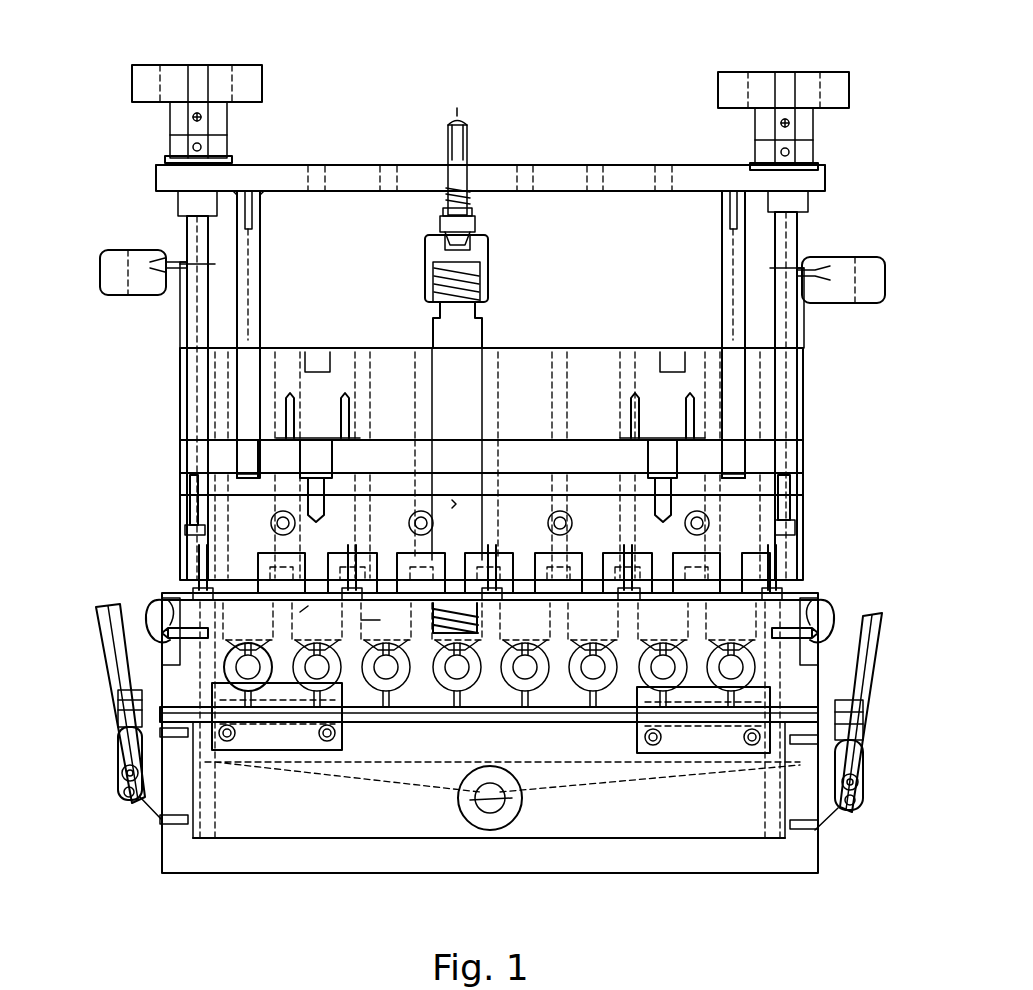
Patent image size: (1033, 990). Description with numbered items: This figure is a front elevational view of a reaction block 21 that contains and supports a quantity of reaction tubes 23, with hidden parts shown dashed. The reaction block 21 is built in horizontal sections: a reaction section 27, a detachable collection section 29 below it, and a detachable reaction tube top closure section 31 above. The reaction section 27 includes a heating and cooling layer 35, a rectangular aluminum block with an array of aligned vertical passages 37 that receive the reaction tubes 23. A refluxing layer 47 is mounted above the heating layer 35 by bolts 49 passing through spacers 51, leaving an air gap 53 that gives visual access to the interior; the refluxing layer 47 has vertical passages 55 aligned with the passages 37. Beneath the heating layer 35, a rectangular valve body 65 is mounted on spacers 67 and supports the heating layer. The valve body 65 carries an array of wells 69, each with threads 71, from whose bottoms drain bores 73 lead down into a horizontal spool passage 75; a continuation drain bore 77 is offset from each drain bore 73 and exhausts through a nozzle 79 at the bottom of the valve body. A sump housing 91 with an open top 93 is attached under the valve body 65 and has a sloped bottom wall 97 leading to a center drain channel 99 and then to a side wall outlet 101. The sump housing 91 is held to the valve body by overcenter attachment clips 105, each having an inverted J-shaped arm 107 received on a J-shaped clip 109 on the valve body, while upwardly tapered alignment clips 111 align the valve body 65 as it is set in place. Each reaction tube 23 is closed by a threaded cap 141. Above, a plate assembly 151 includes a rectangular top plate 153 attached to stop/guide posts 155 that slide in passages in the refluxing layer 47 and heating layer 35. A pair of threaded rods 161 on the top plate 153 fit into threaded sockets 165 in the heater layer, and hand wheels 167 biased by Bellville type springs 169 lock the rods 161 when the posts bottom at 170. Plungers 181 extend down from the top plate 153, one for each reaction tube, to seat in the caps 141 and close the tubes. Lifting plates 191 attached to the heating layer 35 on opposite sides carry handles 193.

The reaction block 21 is at (826, 420).
The reaction tubes 23 is at (470, 330).
The reaction section 27 is at (168, 455).
The collection section 29 is at (138, 850).
The reaction tube top closure section 31 is at (622, 152).
The heating and cooling layer 35 is at (745, 515).
The vertical passages 37 is at (495, 500).
The refluxing layer 47 is at (200, 408).
The bolts 49 is at (318, 488).
The spacers 51 is at (326, 454).
The air gap 53 is at (765, 458).
The vertical passages 55 is at (490, 372).
The valve body 65 is at (793, 612).
The spacers 67 is at (640, 592).
The wells 69 is at (230, 633).
The threads 71 is at (366, 616).
The drain bores 73 is at (282, 642).
The spool passage 75 is at (240, 666).
The continuation drain bore 77 is at (270, 740).
The nozzle 79 is at (262, 760).
The sump housing 91 is at (805, 862).
The open top 93 is at (770, 696).
The sloped bottom wall 97 is at (435, 775).
The center drain channel 99 is at (495, 744).
The side wall outlet 101 is at (496, 798).
The overcenter attachment clips 105 is at (118, 752).
The inverted J-shaped arm 107 is at (120, 640).
The J-shaped clip 109 is at (152, 602).
The alignment clips 111 is at (135, 696).
The threaded cap 141 is at (478, 245).
The plate assembly 151 is at (355, 165).
The top plate 153 is at (695, 165).
The stop/guide posts 155 is at (252, 296).
The rods 161 is at (198, 236).
The threaded sockets 165 is at (192, 492).
The hand wheels 167 is at (258, 82).
The Bellville type springs 169 is at (218, 158).
The bottoming position of stop/guide posts 170 is at (240, 452).
The plungers 181 is at (484, 209).
The lifting plates 191 is at (180, 298).
The handles 193 is at (118, 287).